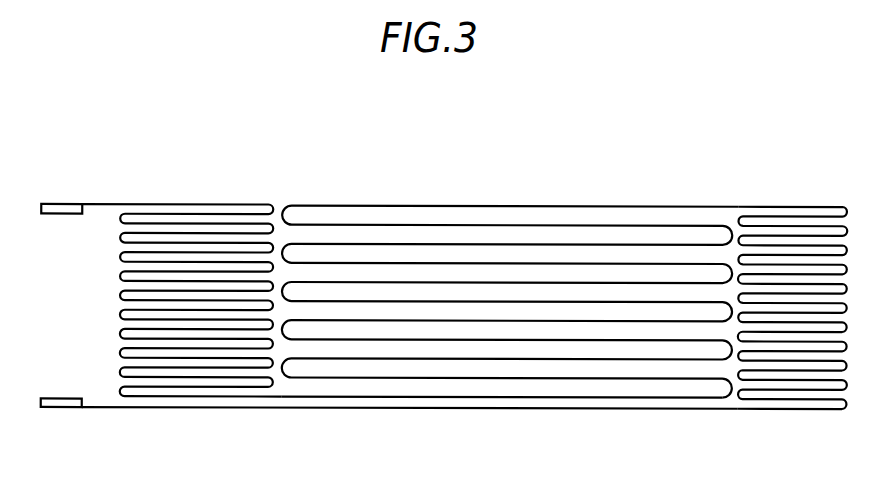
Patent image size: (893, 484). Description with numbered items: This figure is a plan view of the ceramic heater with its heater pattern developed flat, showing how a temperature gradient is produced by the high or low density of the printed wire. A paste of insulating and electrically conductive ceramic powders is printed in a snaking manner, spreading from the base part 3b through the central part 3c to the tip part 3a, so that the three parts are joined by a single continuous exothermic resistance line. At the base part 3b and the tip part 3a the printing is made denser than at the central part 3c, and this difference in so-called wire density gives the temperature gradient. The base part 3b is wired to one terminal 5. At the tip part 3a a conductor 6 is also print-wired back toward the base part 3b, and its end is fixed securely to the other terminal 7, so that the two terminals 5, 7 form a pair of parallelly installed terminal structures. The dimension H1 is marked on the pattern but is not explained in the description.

The tip part 3a is at (780, 205).
The base part 3b is at (189, 205).
The central part 3c is at (503, 219).
The terminal 5 is at (61, 216).
The other terminal 7 is at (63, 398).
The conductor 6 is at (550, 411).
The heating width H1 is at (354, 383).